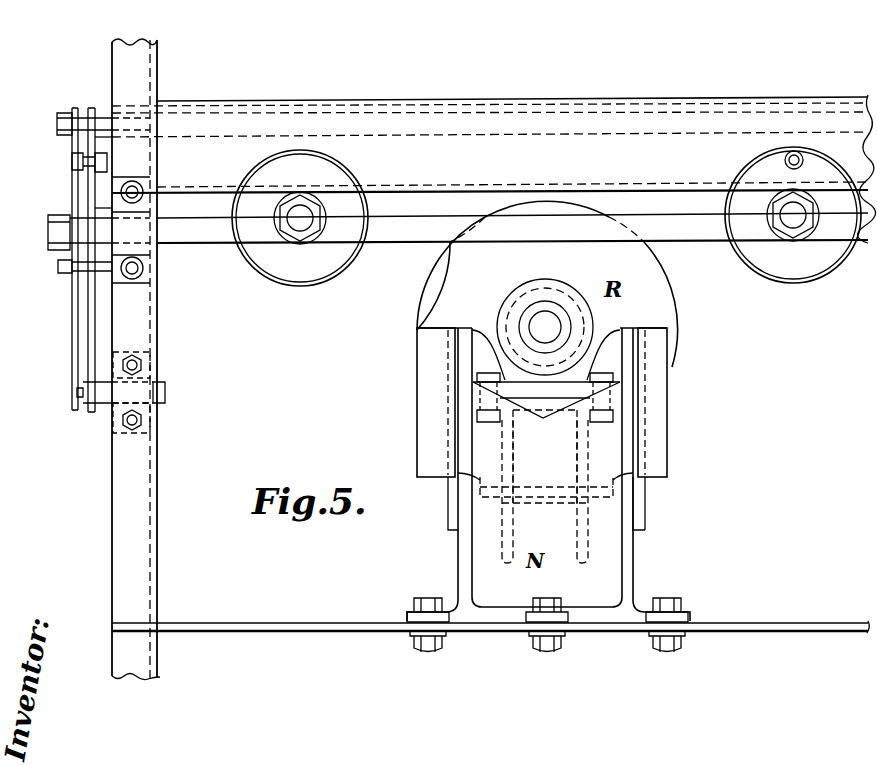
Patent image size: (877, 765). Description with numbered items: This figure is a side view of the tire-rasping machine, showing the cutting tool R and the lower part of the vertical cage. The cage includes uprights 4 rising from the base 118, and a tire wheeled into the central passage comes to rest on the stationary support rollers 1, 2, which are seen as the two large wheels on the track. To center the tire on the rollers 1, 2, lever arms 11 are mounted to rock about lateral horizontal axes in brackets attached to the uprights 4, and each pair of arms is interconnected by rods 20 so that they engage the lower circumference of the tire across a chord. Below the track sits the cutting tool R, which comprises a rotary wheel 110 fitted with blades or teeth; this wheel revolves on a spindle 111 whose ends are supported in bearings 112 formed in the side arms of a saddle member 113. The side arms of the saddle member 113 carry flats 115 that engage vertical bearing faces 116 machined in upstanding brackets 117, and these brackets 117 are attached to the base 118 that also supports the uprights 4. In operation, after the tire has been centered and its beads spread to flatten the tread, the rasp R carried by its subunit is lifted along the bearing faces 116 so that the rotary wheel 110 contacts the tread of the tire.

The uprights 4 is at (115, 67).
The lever arms 11 is at (78, 348).
The support roller 2 is at (307, 270).
The support roller 1 is at (806, 267).
The rod 20 is at (644, 128).
The rotary wheel 110 is at (662, 296).
The spindle 111 is at (540, 320).
The bearings 112 is at (560, 268).
The saddle member 113 is at (590, 452).
The flats 115 is at (641, 496).
The vertical bearing faces 116 is at (662, 401).
The upstanding brackets 117 is at (612, 585).
The base 118 is at (310, 645).